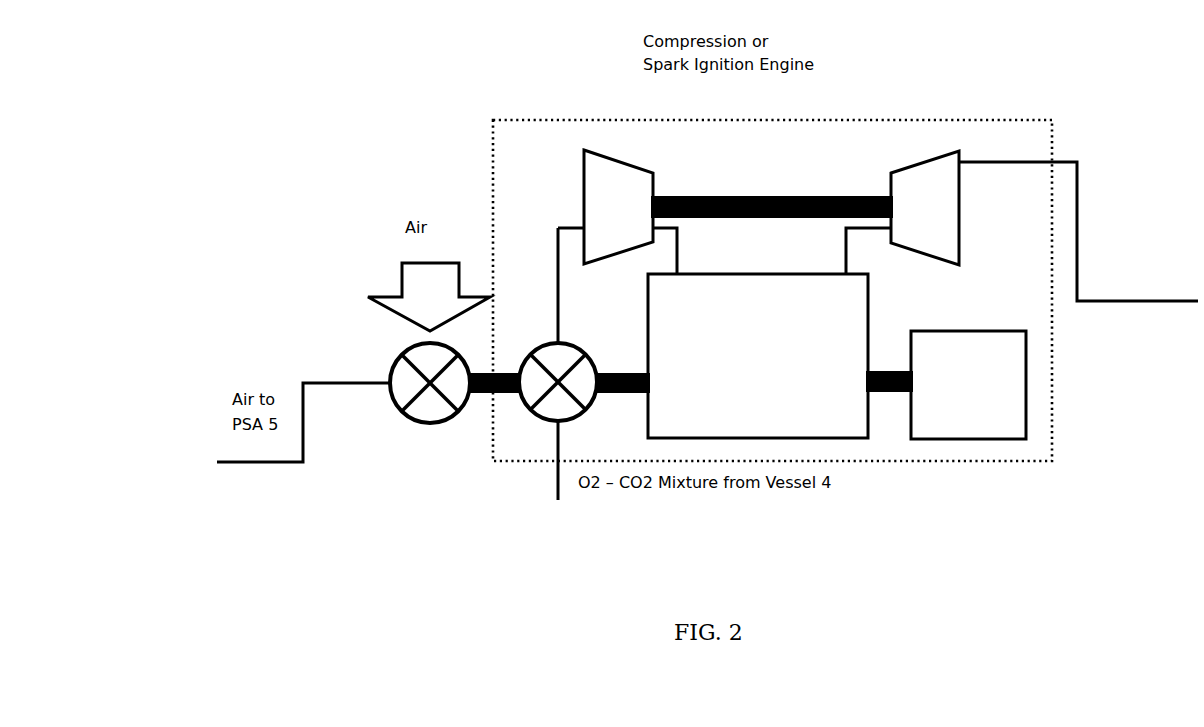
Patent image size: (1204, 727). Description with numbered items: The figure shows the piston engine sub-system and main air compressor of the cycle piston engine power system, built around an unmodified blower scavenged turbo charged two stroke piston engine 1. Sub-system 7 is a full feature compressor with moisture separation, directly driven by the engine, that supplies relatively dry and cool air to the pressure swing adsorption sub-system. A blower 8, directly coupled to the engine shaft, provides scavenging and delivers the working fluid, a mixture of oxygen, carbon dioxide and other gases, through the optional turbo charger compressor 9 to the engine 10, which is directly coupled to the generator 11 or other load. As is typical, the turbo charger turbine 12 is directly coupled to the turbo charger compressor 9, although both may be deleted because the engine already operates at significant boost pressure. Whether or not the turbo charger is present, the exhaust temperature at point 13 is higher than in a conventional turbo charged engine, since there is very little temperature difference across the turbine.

The two stroke piston engine 1 is at (772, 270).
The compressor sub-system 7 is at (423, 391).
The blower 8 is at (558, 364).
The turbo charger compressor 9 is at (630, 212).
The engine 10 is at (758, 356).
The generator 11 is at (968, 385).
The turbo charger turbine 12 is at (902, 212).
The exhaust point 13 is at (1078, 231).